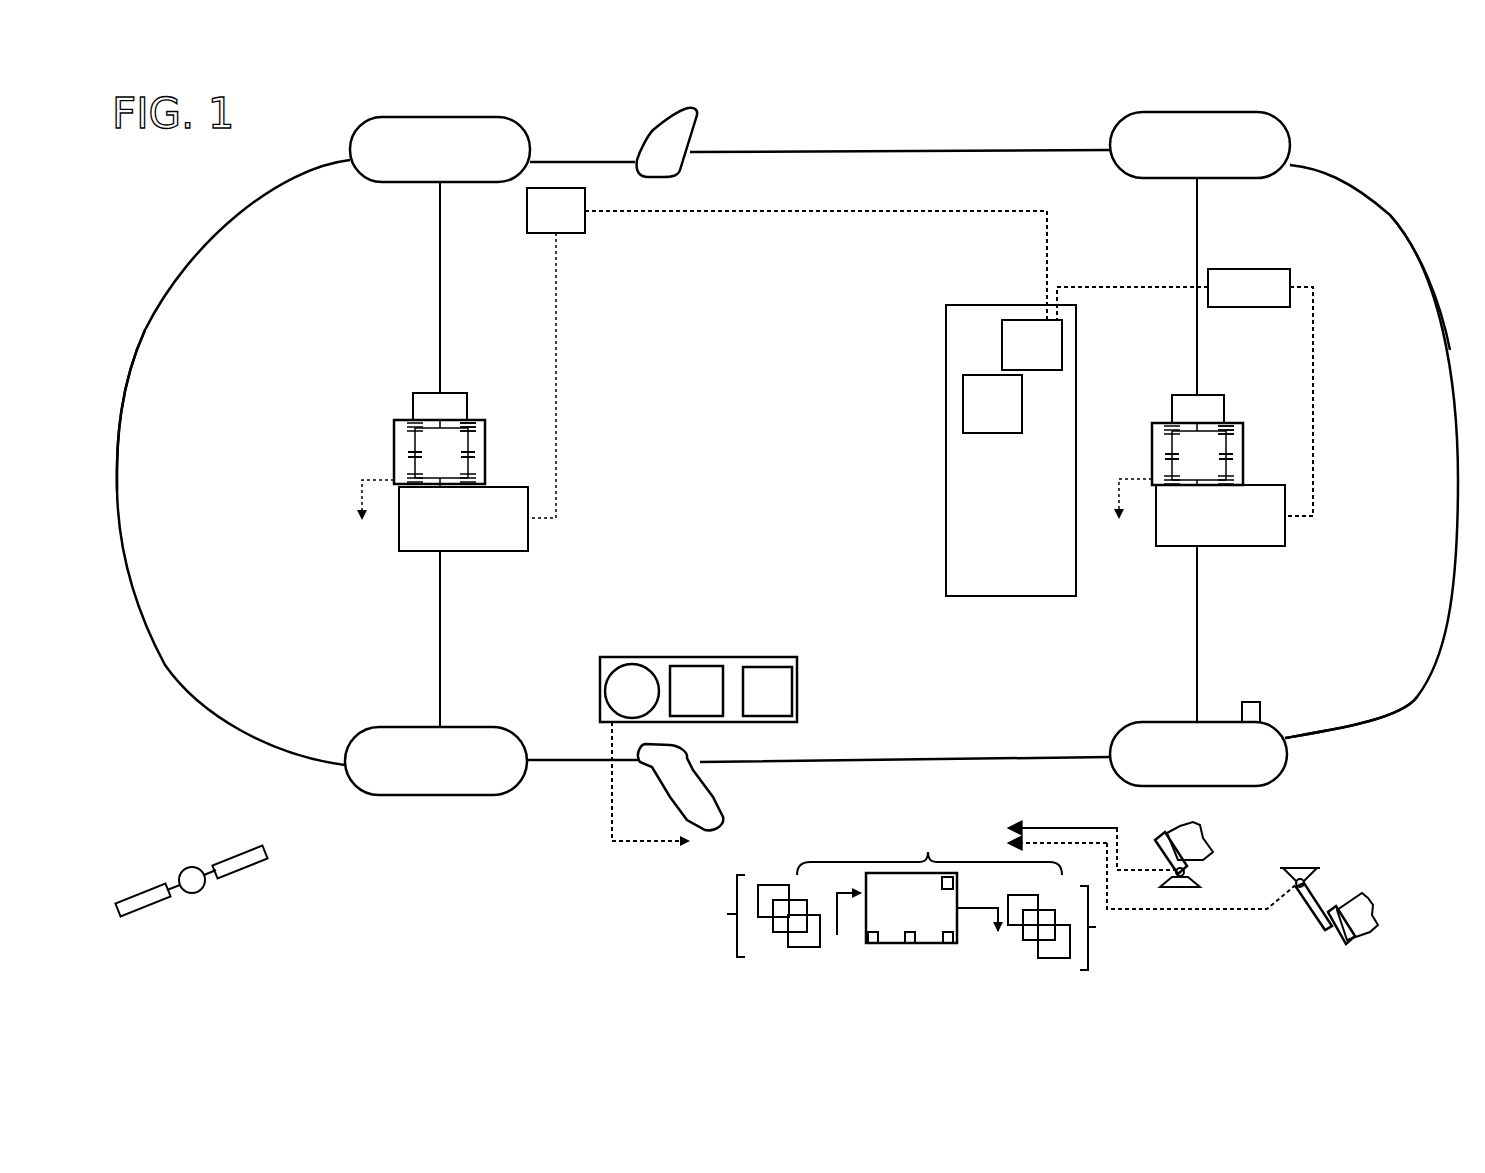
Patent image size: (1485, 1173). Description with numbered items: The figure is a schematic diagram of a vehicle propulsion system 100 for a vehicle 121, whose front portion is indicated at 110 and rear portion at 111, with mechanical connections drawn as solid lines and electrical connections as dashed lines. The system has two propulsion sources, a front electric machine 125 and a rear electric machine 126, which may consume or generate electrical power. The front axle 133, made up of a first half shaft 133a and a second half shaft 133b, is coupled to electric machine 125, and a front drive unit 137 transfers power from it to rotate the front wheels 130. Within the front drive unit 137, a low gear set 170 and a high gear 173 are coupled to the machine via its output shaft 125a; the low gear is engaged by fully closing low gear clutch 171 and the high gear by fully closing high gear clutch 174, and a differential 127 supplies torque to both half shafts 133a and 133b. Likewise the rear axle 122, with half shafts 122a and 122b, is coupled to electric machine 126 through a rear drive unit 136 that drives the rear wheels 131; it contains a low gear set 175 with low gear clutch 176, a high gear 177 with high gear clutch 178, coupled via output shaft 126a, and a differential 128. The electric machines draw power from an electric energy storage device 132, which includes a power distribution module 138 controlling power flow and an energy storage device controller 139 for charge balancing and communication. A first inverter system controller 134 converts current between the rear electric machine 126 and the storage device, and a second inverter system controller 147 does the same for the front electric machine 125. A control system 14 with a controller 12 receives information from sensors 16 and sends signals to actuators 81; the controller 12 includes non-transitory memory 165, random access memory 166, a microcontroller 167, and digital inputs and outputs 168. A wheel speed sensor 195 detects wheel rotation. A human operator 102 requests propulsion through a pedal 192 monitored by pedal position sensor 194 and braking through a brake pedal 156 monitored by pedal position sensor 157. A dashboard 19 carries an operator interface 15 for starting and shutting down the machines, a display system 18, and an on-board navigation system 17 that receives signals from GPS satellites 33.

The vehicle propulsion system 100 is at (933, 130).
The front portion of vehicle 110 is at (140, 252).
The rear portion of vehicle 111 is at (1430, 192).
The vehicle 121 is at (1399, 742).
The front wheels 130 is at (457, 117).
The rear wheels 131 is at (1237, 112).
The front axle 133 is at (411, 454).
The first half shaft 133a is at (441, 287).
The second half shaft 133b is at (439, 616).
The rear axle 122 is at (1249, 450).
The first half shaft 122a is at (1198, 234).
The second half shaft 122b is at (1198, 650).
The second inverter system controller 147 is at (787, 353).
The first inverter system controller 134 is at (1185, 392).
The electric energy storage device 132 is at (1025, 501).
The power distribution module 138 is at (1032, 345).
The electric energy storage device controller 139 is at (992, 404).
The front drive unit 137 is at (488, 482).
The rear drive unit 136 is at (1251, 483).
The differential 127 is at (440, 406).
The differential 128 is at (1198, 409).
The front electric machine 125 is at (463, 519).
The output shaft 125a is at (438, 481).
The rear electric machine 126 is at (1220, 515).
The output shaft 126a is at (1196, 482).
The low gear set 170 is at (391, 432).
The low gear clutch 171 is at (407, 458).
The high gear 173 is at (491, 433).
The high gear clutch 174 is at (479, 459).
The low gear set 175 is at (1150, 437).
The low gear clutch 176 is at (1165, 461).
The high gear 177 is at (1249, 434).
The high gear clutch 178 is at (1236, 459).
The wheel speed sensor 195 is at (1256, 702).
The dashboard 19 is at (698, 730).
The operator interface 15 is at (621, 701).
The display system 18 is at (685, 701).
The on-board navigation system 17 is at (756, 701).
The control system 14 is at (928, 862).
The controller 12 is at (918, 924).
The sensors 16 is at (758, 916).
The actuators 81 is at (1068, 928).
The non-transitory memory 165 is at (873, 944).
The random access memory 166 is at (910, 944).
The microcontroller 167 is at (949, 944).
The digital inputs/outputs 168 is at (954, 883).
The pedal 192 is at (1168, 857).
The pedal position sensor 194 is at (1186, 872).
The human operator 102 is at (1193, 838).
The pedal position sensor 157 is at (1291, 878).
The brake pedal 156 is at (1323, 931).
The GPS satellites 33 is at (202, 893).